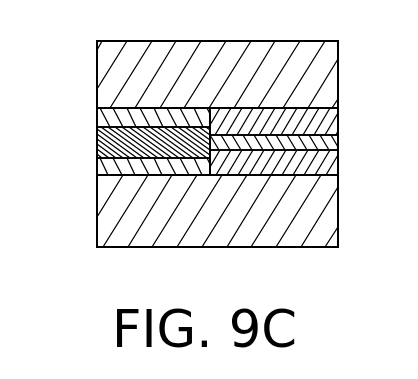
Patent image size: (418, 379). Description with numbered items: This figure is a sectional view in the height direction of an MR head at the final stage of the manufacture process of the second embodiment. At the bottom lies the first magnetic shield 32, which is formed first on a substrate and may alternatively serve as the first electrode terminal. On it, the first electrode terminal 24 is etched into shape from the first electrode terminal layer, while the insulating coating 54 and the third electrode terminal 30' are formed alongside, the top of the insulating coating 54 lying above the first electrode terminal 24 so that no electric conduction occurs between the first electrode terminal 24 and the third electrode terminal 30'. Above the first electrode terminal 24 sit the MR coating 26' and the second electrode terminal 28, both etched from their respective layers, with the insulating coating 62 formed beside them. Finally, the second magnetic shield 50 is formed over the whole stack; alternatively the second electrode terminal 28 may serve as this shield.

The second magnetic shield 50 is at (210, 41).
The first magnetic shield 32 is at (208, 247).
The second electrode terminal 28 is at (97, 117).
The MR coating 26' is at (125, 142).
The first electrode terminal 24 is at (97, 175).
The insulating coating 62 is at (338, 113).
The third electrode terminal 30' is at (300, 141).
The insulating coating 54 is at (338, 172).